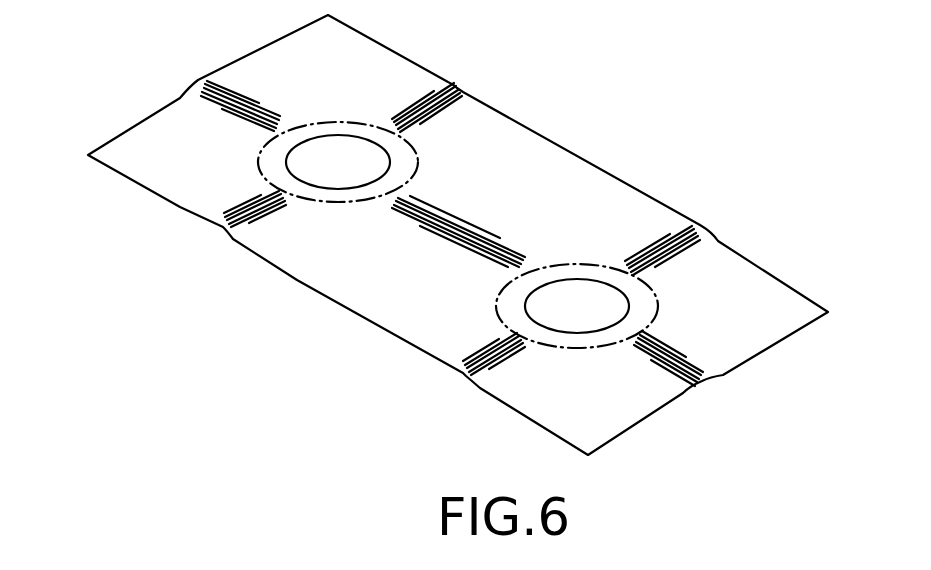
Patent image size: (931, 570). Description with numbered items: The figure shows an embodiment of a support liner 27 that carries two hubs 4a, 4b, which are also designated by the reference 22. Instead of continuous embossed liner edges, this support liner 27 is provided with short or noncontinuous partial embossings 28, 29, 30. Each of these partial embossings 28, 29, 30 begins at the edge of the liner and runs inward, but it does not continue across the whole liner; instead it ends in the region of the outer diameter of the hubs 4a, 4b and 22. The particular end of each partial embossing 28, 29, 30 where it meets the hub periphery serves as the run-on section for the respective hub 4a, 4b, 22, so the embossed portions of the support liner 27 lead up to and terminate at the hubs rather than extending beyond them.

The support liner 27 is at (575, 180).
The partial embossing 28 is at (463, 89).
The partial embossing 29 is at (228, 90).
The partial embossing 30 is at (447, 228).
The hub 4a is at (346, 119).
The hub 4b is at (547, 336).
The hub 22 is at (458, 229).